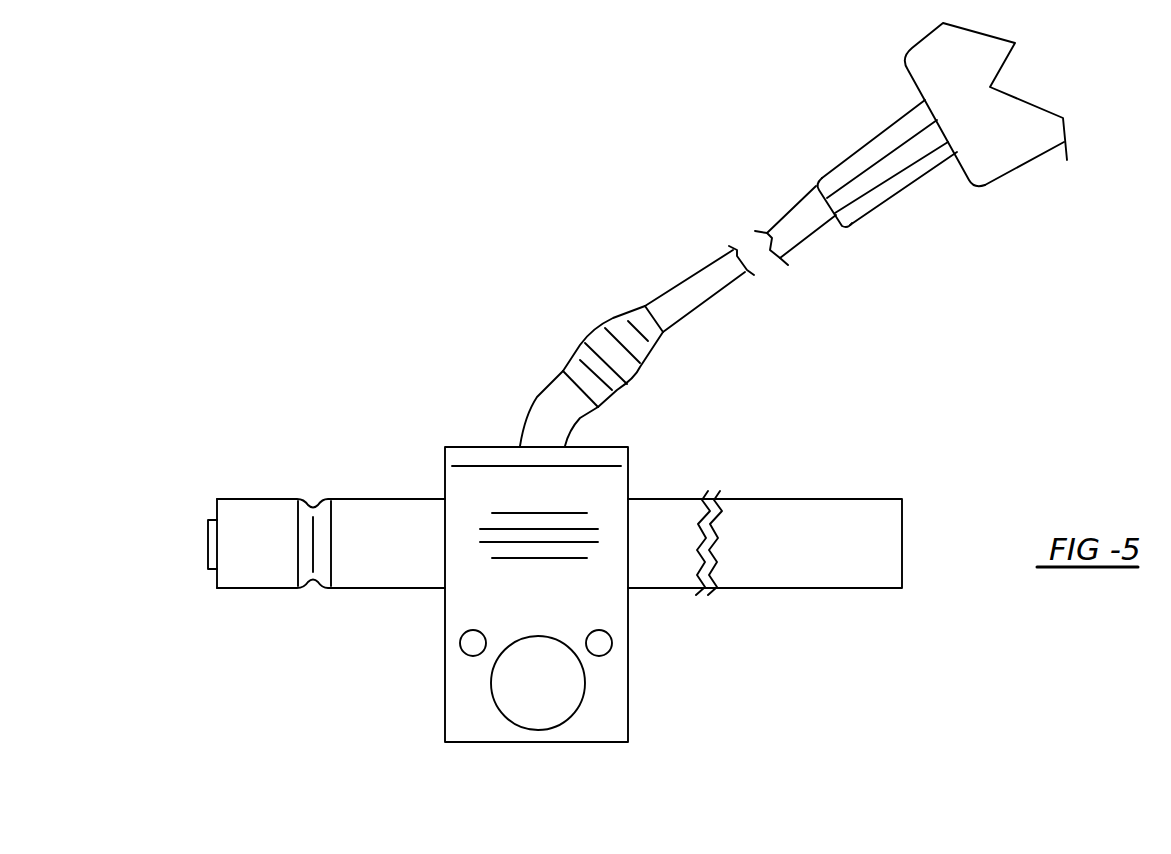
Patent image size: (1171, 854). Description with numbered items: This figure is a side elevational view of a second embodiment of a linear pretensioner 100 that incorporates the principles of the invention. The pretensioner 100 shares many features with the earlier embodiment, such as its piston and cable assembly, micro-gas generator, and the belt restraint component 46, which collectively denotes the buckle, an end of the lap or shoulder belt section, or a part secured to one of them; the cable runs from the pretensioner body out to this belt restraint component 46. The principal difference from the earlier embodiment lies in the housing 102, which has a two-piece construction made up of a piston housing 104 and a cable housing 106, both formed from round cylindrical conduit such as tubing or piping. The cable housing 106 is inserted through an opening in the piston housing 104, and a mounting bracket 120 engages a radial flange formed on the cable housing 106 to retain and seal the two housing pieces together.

The linear pretensioner 100 is at (420, 306).
The housing 102 is at (366, 448).
The piston housing 104 is at (671, 236).
The cable housing 106 is at (545, 415).
The mounting bracket 120 is at (401, 661).
The belt restraint component 46 is at (995, 148).